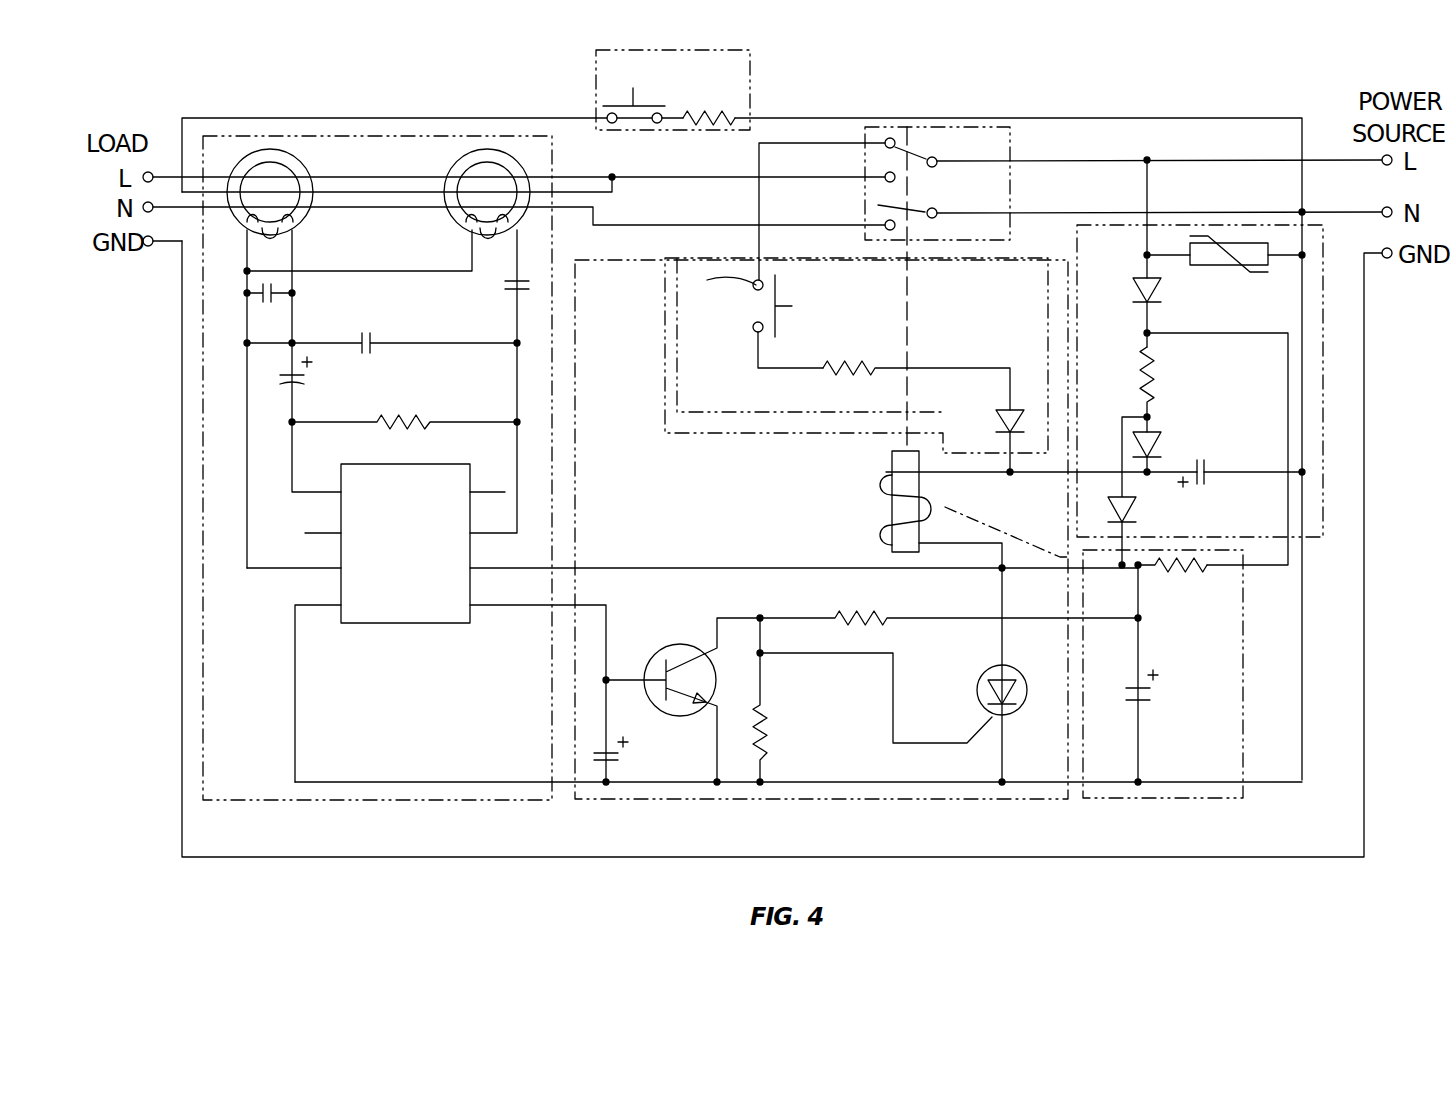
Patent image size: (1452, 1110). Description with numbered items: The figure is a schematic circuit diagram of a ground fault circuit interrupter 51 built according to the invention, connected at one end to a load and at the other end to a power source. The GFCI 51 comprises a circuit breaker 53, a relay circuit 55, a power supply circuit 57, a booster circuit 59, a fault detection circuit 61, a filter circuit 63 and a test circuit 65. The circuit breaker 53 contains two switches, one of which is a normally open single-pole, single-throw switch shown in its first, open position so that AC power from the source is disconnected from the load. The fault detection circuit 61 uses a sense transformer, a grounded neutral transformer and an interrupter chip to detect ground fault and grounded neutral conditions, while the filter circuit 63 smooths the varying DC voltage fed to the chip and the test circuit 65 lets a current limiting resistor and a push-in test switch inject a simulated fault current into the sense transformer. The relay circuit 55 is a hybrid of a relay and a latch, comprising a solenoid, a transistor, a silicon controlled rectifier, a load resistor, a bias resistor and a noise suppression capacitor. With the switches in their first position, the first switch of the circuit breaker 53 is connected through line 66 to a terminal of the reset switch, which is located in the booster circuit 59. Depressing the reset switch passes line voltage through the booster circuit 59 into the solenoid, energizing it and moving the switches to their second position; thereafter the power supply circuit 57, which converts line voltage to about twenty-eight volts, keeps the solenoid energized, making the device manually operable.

The ground fault circuit interrupter 51 is at (298, 874).
The circuit breaker 53 is at (1012, 138).
The relay circuit 55 is at (620, 800).
The power supply circuit 57 is at (1316, 538).
The booster circuit 59 is at (770, 413).
The fault detection circuit 61 is at (443, 801).
The filter circuit 63 is at (1193, 799).
The test circuit 65 is at (752, 80).
The line 66 is at (757, 203).